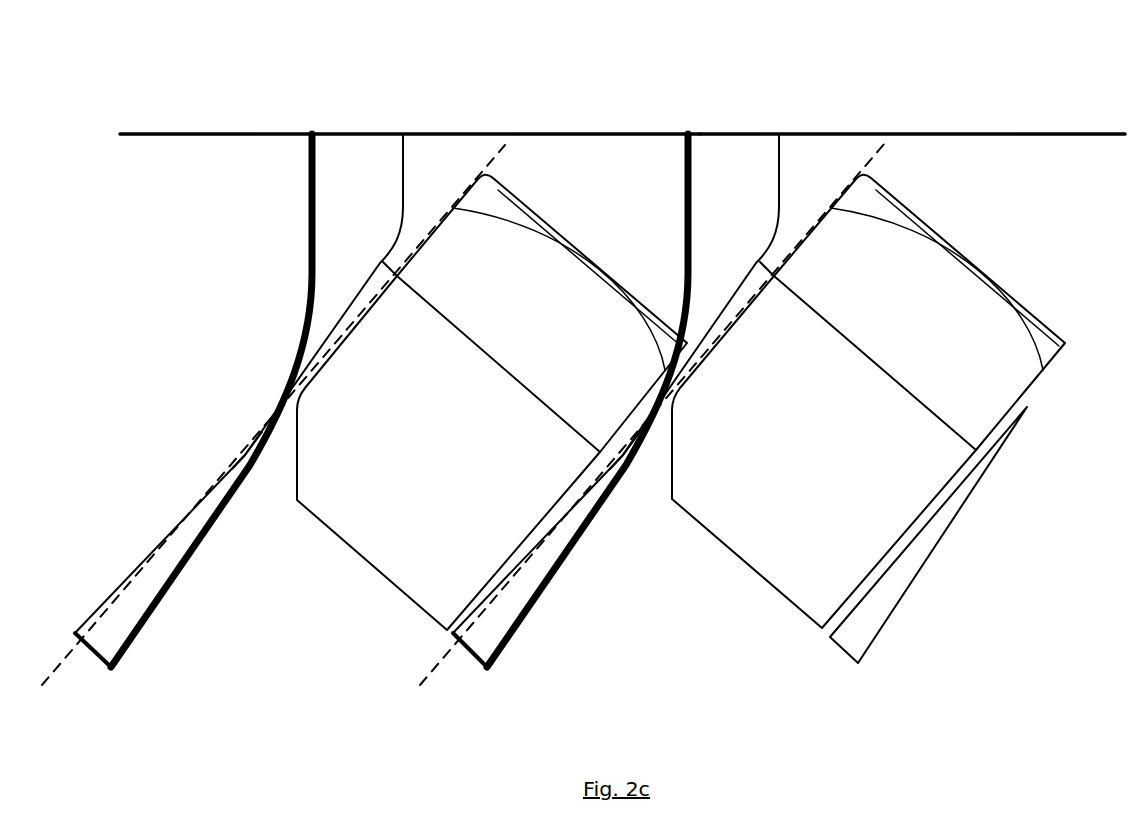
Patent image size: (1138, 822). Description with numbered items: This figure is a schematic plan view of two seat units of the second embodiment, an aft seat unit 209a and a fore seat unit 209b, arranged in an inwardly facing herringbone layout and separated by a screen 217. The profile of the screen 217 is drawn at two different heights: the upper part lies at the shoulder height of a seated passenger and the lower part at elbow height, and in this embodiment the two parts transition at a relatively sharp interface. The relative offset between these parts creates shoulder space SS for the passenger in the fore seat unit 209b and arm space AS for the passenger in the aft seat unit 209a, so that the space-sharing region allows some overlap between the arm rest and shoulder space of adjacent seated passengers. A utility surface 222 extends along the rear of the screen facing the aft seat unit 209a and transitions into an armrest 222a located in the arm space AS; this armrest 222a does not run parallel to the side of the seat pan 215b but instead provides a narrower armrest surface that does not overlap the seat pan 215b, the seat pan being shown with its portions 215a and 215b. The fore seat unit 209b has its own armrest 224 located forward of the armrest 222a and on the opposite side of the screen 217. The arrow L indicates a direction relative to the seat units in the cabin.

The aft seat unit 209a is at (1021, 130).
The fore seat unit 209b is at (611, 130).
The screen 217 is at (327, 217).
The utility surface 222 is at (345, 287).
The armrest 222a is at (643, 440).
The armrest 224 is at (483, 634).
The seat pan 215a is at (724, 313).
The seat pan 215b is at (636, 453).
The shoulder space SS is at (244, 439).
The arm space AS is at (629, 473).
The flow direction L is at (883, 655).